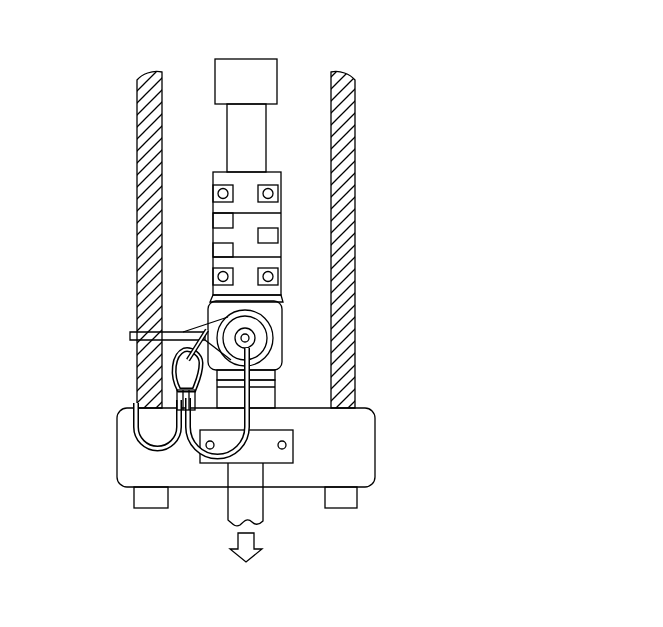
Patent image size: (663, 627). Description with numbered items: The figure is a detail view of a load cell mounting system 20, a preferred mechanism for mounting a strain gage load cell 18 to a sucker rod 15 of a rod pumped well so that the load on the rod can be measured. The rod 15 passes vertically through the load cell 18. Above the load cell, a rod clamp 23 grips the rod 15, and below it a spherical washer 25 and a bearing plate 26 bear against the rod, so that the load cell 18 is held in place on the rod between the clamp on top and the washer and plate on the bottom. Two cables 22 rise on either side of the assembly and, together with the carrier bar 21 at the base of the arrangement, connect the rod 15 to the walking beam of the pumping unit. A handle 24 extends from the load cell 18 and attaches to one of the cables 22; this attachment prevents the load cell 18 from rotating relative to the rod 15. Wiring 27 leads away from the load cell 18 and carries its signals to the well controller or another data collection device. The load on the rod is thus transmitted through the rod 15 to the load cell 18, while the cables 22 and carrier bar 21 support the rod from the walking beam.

The load cell mounting system 20 is at (441, 49).
The cables 22 is at (137, 125).
The rod clamp 23 is at (272, 208).
The load cell 18 is at (282, 327).
The handle 24 is at (130, 336).
The spherical washer 25 is at (275, 378).
The bearing plate 26 is at (275, 400).
The wiring 27 is at (130, 418).
The carrier bar 21 is at (138, 467).
The rod 15 is at (247, 503).